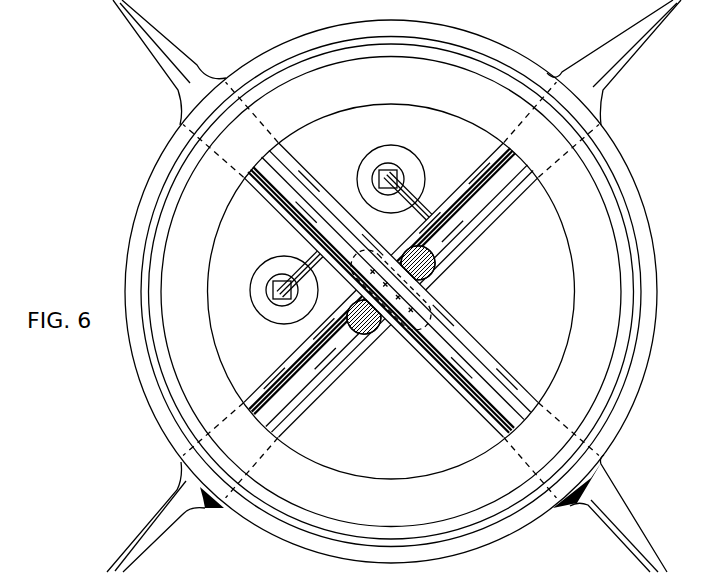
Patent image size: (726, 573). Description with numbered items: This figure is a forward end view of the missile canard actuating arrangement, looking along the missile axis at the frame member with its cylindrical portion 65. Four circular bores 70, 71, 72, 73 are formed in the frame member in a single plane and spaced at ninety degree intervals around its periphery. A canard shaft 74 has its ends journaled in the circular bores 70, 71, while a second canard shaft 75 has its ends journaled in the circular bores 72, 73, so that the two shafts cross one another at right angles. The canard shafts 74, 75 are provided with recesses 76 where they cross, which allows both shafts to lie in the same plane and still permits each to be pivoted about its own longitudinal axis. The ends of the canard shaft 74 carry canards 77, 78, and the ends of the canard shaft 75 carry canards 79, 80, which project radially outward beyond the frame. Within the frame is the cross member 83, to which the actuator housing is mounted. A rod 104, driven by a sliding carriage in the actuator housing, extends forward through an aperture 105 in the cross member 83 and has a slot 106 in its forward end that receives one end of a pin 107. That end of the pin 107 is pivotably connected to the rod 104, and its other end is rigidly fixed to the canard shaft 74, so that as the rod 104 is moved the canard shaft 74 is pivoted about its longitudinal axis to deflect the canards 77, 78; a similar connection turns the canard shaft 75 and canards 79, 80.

The cylindrical portion 65 is at (391, 292).
The circular bore 70 is at (237, 410).
The circular bore 71 is at (531, 117).
The circular bore 72 is at (538, 408).
The circular bore 73 is at (256, 120).
The canard shaft 74 is at (458, 217).
The canard shaft 75 is at (458, 357).
The recesses 76 is at (427, 280).
The canard 77 is at (175, 498).
The canard 78 is at (633, 58).
The canard 79 is at (607, 502).
The canard 80 is at (165, 38).
The cross member 83 is at (391, 291).
The rod 104 is at (397, 163).
The aperture 105 is at (368, 157).
The slot 106 is at (405, 178).
The pin 107 is at (417, 213).